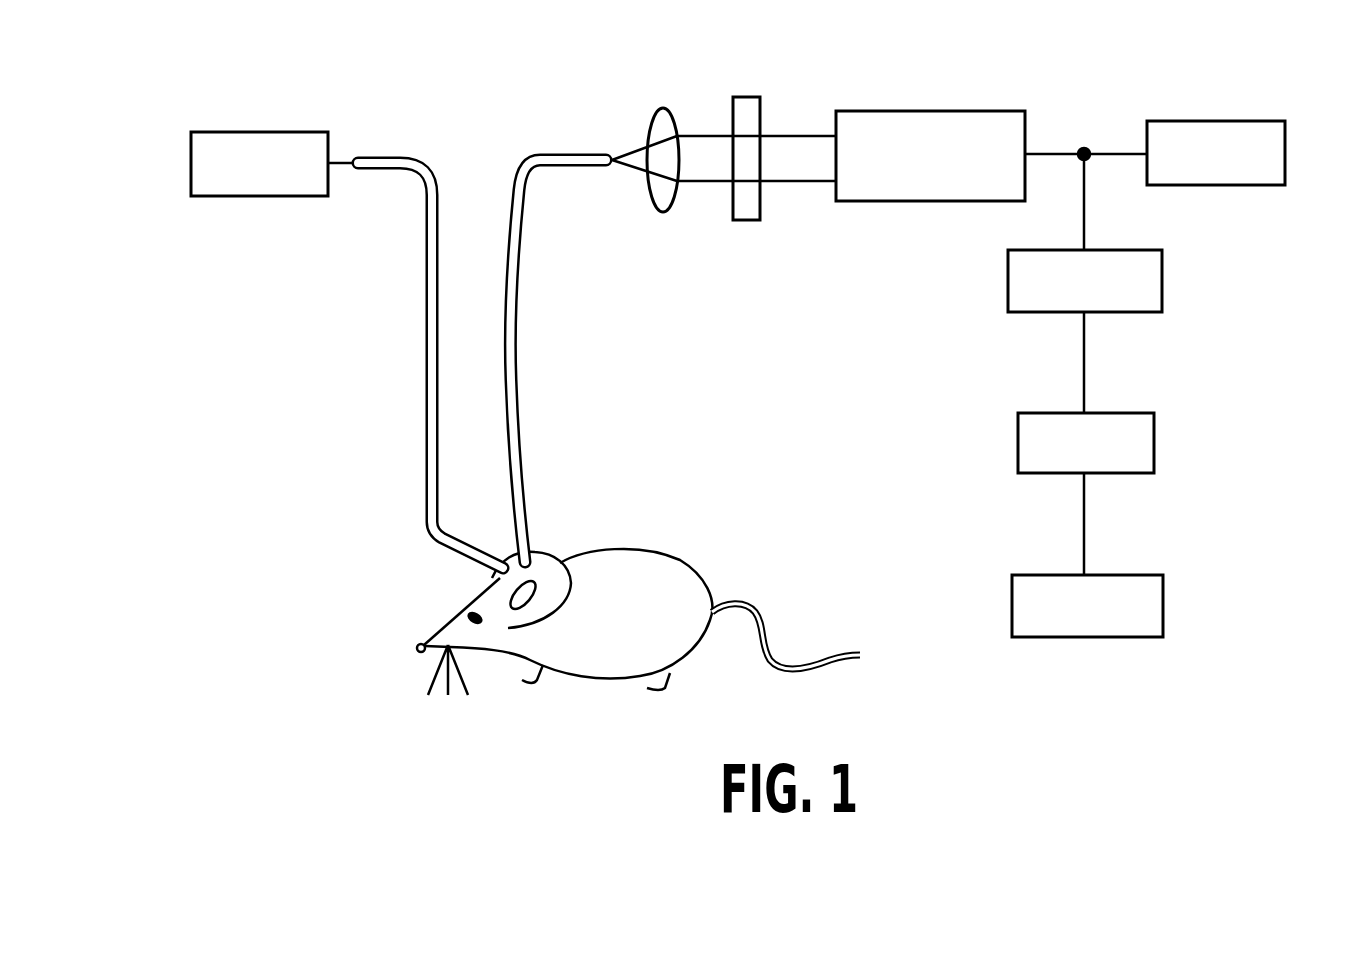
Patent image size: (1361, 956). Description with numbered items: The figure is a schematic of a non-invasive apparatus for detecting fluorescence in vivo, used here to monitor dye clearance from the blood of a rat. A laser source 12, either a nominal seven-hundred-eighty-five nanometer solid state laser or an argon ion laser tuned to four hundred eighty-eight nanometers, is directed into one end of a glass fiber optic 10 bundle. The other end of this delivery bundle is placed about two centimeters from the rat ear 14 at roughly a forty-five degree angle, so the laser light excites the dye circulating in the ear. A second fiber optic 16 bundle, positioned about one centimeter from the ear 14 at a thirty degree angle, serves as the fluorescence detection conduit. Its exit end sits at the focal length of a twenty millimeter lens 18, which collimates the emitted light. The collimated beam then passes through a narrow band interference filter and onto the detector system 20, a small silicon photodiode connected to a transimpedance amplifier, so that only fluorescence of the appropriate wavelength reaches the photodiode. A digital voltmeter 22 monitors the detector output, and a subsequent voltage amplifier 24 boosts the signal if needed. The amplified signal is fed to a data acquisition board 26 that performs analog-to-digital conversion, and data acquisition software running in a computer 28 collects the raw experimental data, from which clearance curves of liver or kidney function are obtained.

The fiber optic 10 is at (425, 403).
The source 12 is at (267, 132).
The ear 14 is at (494, 585).
The second fiber optic 16 is at (525, 485).
The lens 18 is at (664, 108).
The detector system 20 is at (1010, 78).
The digital voltmeter 22 is at (1285, 143).
The voltage amplifier 24 is at (1162, 273).
The data acquisition board 26 is at (1155, 433).
The computer 28 is at (1163, 598).